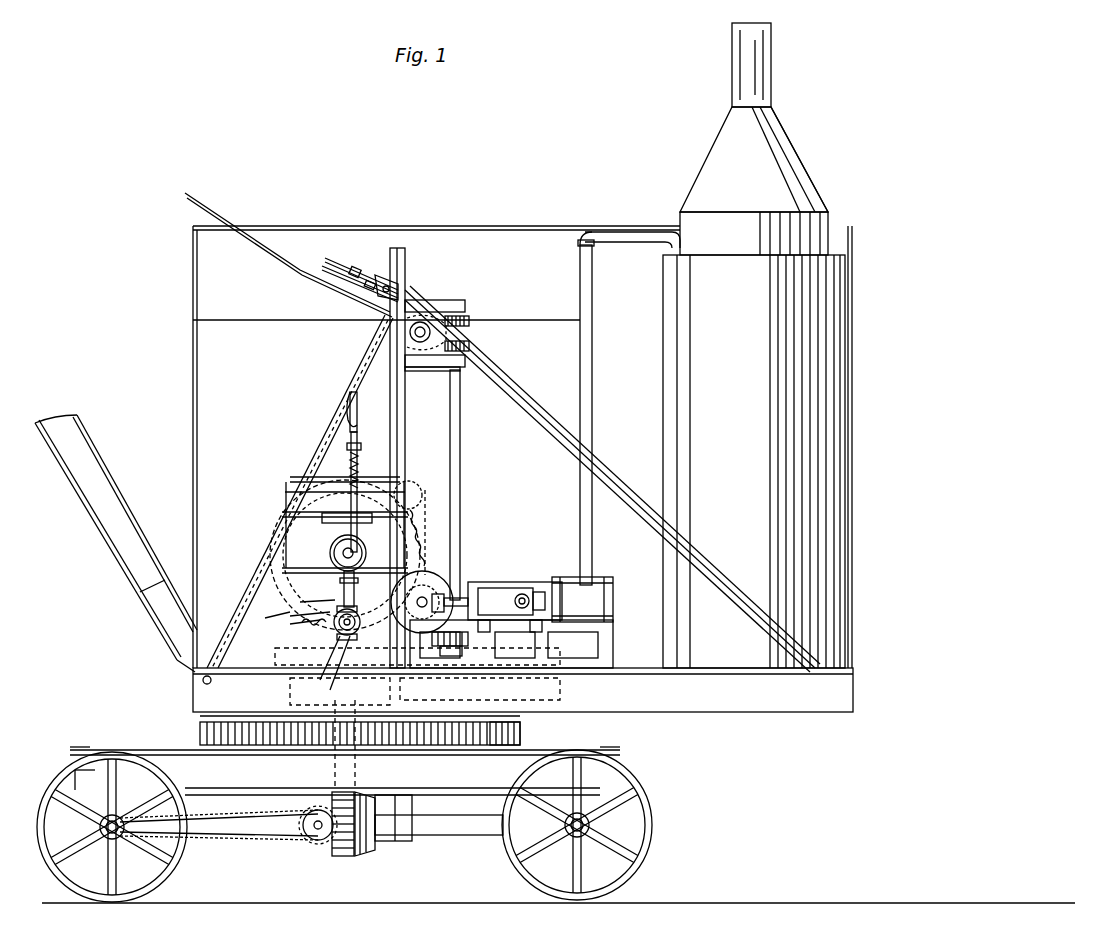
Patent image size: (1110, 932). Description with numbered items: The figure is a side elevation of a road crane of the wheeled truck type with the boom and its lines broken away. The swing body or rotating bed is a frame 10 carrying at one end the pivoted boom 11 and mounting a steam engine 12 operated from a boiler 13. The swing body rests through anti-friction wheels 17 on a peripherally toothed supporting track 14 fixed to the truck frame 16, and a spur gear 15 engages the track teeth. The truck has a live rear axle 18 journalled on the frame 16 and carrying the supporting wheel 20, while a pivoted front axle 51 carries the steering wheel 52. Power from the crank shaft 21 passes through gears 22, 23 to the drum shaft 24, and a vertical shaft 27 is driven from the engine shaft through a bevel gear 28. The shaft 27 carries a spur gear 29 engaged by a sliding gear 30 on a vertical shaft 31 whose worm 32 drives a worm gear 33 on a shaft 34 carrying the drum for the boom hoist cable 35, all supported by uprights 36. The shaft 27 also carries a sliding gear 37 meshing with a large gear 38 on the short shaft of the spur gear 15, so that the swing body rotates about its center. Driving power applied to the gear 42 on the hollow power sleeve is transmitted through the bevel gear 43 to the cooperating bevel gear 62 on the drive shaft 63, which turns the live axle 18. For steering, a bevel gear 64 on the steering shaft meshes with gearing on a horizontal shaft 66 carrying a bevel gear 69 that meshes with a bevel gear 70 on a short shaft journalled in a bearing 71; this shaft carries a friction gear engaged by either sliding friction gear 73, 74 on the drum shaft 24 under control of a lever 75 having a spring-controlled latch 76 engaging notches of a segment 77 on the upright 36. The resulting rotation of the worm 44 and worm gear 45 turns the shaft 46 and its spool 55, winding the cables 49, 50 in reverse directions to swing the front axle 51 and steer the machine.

The swing body frame 10 is at (734, 700).
The pivoted boom 11 is at (98, 518).
The steam engine 12 is at (570, 578).
The boiler 13 is at (690, 380).
The supporting track 14 is at (205, 735).
The spur gear 15 is at (522, 738).
The truck frame 16 is at (165, 755).
The anti-friction wheels 17 is at (337, 747).
The live rear axle 18 is at (590, 826).
The supporting wheel 20 is at (645, 790).
The crank shaft 21 is at (427, 570).
The gear 22 is at (422, 490).
The gear 23 is at (410, 505).
The drum shaft 24 is at (340, 555).
The vertical shaft 27 is at (340, 691).
The bevel gear 28 is at (362, 593).
The spur gear 29 is at (356, 625).
The sliding gear 30 is at (465, 630).
The vertical shaft 31 is at (462, 458).
The worm 32 is at (468, 330).
The worm gear 33 is at (428, 372).
The shaft 34 is at (375, 310).
The boom hoist cable 35 is at (290, 264).
The uprights 36 is at (393, 250).
The sliding gear 37 is at (417, 672).
The large gear 38 is at (576, 690).
The gear 42 is at (294, 627).
The bevel gear 43 is at (340, 792).
The worm 44 is at (330, 842).
The worm gear 45 is at (315, 812).
The shaft 46 is at (305, 835).
The cable 49 is at (208, 853).
The cable 50 is at (232, 818).
The pivoted front axle 51 is at (100, 827).
The carrying wheel 52 is at (165, 880).
The spool 55 is at (325, 838).
The bevel gear 62 is at (362, 858).
The drive shaft 63 is at (458, 836).
The bevel gear 64 is at (312, 625).
The horizontal shaft 66 is at (329, 676).
The bevel gear 69 is at (316, 669).
The bevel gear 70 is at (268, 615).
The bearing 71 is at (304, 611).
The sliding friction gear 73 is at (358, 546).
The sliding friction gear 74 is at (313, 599).
The lever 75 is at (350, 446).
The latch 76 is at (360, 402).
The segment 77 is at (366, 460).